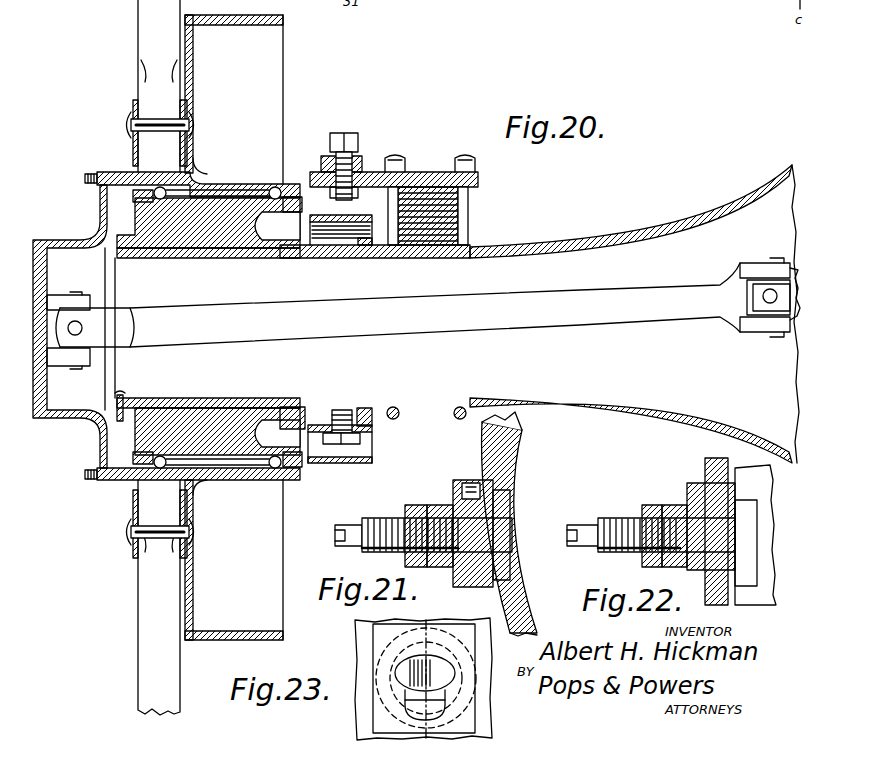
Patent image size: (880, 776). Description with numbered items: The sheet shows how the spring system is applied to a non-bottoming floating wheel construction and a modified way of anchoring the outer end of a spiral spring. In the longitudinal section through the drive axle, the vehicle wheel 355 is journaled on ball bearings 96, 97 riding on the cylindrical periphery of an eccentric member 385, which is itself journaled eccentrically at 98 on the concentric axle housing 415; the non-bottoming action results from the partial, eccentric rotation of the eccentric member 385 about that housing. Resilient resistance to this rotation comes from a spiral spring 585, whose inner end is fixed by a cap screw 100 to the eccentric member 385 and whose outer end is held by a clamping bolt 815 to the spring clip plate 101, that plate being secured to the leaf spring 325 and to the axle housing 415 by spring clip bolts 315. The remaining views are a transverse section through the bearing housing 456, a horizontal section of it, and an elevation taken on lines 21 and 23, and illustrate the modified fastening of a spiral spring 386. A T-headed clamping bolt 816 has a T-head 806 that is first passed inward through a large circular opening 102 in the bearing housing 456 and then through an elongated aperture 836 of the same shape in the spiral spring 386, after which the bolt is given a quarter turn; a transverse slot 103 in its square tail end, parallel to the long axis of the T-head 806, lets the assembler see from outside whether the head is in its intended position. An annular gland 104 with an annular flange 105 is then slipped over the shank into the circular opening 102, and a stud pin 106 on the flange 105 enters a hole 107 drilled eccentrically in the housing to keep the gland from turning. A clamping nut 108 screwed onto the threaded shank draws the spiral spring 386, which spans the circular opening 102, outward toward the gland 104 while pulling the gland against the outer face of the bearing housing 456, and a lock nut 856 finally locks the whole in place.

In FIG. 20, the vehicle wheel 355 is at (150, 18).
In FIG. 20, the ball bearing 96 is at (190, 183).
In FIG. 20, the ball bearing 97 is at (268, 183).
In FIG. 20, the eccentric journal 98 is at (272, 255).
In FIG. 20, the eccentric member 385 is at (210, 247).
In FIG. 20, the clamping bolt 815 is at (342, 132).
In FIG. 20, the spring clip plate 101 is at (480, 177).
In FIG. 20, the leaf spring 325 is at (470, 213).
In FIG. 20, the spring clip bolt 315 is at (472, 232).
In FIG. 20, the spiral spring 585 is at (356, 190).
In FIG. 20, the cap screw 100 is at (356, 441).
In FIG. 20, the axle housing 415 is at (762, 178).
In FIG. 21, the bearing housing 456 is at (493, 450).
In FIG. 22, the bearing housing 456 is at (706, 466).
In FIG. 23, the bearing housing 456 is at (370, 626).
In FIG. 21, the hole 107 is at (470, 483).
In FIG. 23, the hole 107 is at (465, 668).
In FIG. 21, the stud pin 106 is at (462, 488).
In FIG. 23, the stud pin 106 is at (470, 690).
In FIG. 21, the annular flange 105 is at (458, 586).
In FIG. 22, the annular flange 105 is at (708, 486).
In FIG. 23, the annular flange 105 is at (420, 660).
In FIG. 21, the annular gland 104 is at (496, 512).
In FIG. 21, the clamping nut 108 is at (440, 512).
In FIG. 22, the clamping nut 108 is at (676, 507).
In FIG. 23, the clamping nut 108 is at (453, 650).
In FIG. 21, the lock nut 856 is at (410, 512).
In FIG. 22, the lock nut 856 is at (648, 511).
In FIG. 21, the T-headed clamping bolt 816 is at (350, 524).
In FIG. 22, the T-headed clamping bolt 816 is at (585, 524).
In FIG. 23, the T-headed clamping bolt 816 is at (395, 672).
In FIG. 21, the transverse slot 103 is at (337, 540).
In FIG. 21, the circular opening 102 is at (437, 535).
In FIG. 22, the circular opening 102 is at (770, 535).
In FIG. 23, the circular opening 102 is at (417, 624).
In FIG. 21, the spiral spring 386 is at (512, 500).
In FIG. 22, the spiral spring 386 is at (740, 492).
In FIG. 23, the spiral spring 386 is at (375, 728).
In FIG. 21, the T-head 806 is at (512, 548).
In FIG. 22, the T-head 806 is at (760, 540).
In FIG. 23, the T-head 806 is at (397, 662).
In FIG. 21, the elongated aperture 836 is at (506, 560).
In FIG. 22, the elongated aperture 836 is at (666, 535).
In FIG. 23, the elongated aperture 836 is at (478, 723).
In FIG. 21, the section line 21- 21 is at (332, 536).
In FIG. 21, the section line 23- 23 is at (513, 473).